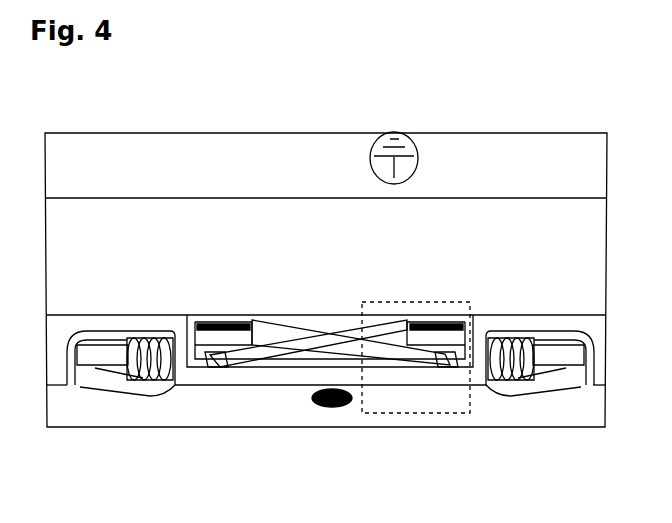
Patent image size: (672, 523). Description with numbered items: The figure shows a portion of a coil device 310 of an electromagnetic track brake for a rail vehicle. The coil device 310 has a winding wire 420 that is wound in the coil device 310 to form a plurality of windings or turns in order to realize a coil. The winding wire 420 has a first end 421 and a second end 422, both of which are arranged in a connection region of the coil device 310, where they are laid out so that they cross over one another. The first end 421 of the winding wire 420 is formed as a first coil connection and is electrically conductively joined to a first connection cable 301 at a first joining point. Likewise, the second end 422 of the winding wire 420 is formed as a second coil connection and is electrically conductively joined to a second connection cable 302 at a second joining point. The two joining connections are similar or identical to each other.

The coil device 310 is at (555, 98).
The winding wire 420 is at (345, 314).
The first end of the winding wire 421 is at (307, 345).
The second end of the winding wire 422 is at (346, 322).
The first connection cable 301 is at (93, 350).
The second connection cable 302 is at (560, 350).